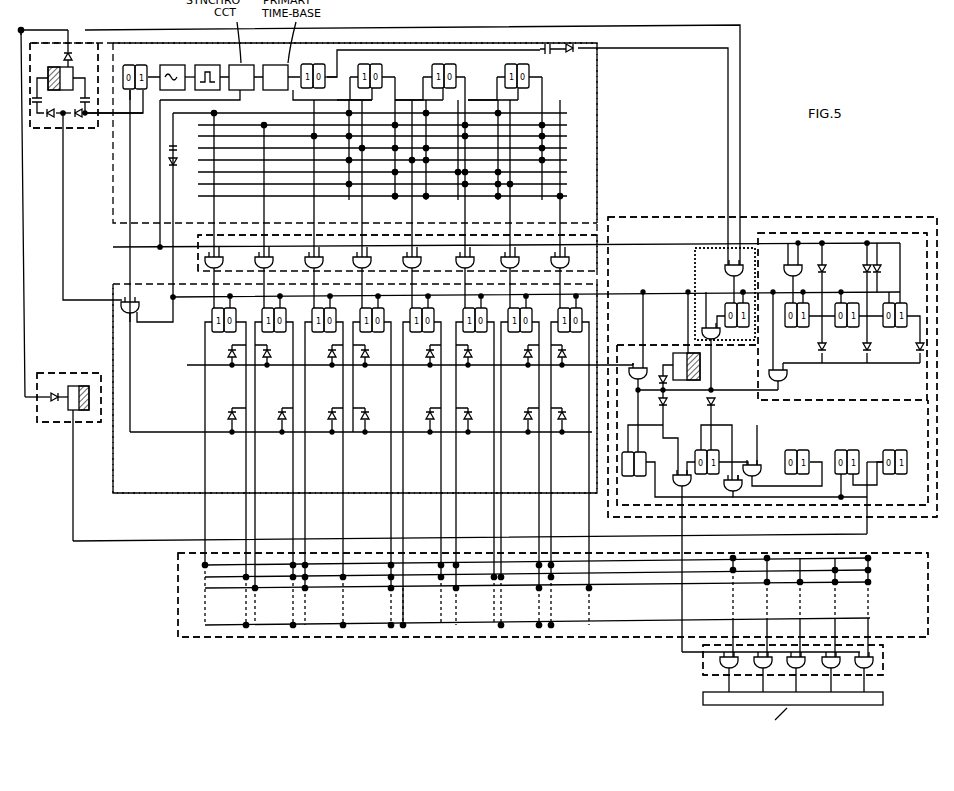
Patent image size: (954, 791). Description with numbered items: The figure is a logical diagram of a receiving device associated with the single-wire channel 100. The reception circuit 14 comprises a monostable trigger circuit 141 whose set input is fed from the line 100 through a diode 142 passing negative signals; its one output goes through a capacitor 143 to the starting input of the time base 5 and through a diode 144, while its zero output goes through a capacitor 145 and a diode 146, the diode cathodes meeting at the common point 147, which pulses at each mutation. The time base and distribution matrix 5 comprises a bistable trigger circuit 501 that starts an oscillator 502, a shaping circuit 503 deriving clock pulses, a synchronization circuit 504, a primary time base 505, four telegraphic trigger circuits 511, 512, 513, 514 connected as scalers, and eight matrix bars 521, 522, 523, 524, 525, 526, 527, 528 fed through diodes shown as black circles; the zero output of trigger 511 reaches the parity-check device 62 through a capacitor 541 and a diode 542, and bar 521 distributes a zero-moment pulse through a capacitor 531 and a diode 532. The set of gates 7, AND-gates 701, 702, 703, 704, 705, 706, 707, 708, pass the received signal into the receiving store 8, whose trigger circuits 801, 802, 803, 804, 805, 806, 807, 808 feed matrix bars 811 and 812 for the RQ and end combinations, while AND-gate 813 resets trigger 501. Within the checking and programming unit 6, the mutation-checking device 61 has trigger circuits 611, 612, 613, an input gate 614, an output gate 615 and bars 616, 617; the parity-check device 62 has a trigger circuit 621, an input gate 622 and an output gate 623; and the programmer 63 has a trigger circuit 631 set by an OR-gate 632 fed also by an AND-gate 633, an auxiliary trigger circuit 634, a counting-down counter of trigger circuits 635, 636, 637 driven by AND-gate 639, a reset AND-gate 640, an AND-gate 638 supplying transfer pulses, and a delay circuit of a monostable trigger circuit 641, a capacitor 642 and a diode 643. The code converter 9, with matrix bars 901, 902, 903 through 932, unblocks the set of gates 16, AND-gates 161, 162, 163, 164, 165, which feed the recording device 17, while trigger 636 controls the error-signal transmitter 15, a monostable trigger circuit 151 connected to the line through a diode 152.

The single-wire channel 100 is at (38, 21).
The reception circuit 14 is at (89, 127).
The monostable trigger circuit 141 is at (52, 72).
The diode 142 is at (66, 56).
The capacitor 143 is at (78, 95).
The diode 144 is at (78, 117).
The capacitor 145 is at (46, 95).
The diode 146 is at (52, 116).
The common point of diodes 147 is at (63, 117).
The error-signal transmitter 15 is at (68, 373).
The monostable trigger circuit 151 is at (64, 391).
The diode 152 is at (66, 463).
The time base and distribution matrix 5 is at (595, 97).
The bistable trigger circuit 501 is at (136, 65).
The oscillator 502 is at (177, 70).
The shaping circuit 503 is at (212, 70).
The synchronization circuit 504 is at (211, 75).
The primary time base 505 is at (286, 65).
The trigger circuit 511 is at (308, 65).
The trigger circuit 512 is at (373, 65).
The trigger circuit 513 is at (428, 65).
The trigger circuit 514 is at (505, 65).
The matrix bar 521 is at (381, 114).
The matrix bar 522 is at (393, 126).
The matrix bar 523 is at (393, 137).
The matrix bar 524 is at (393, 149).
The matrix bar 525 is at (393, 161).
The matrix bar 526 is at (393, 173).
The matrix bar 527 is at (393, 185).
The matrix bar 528 is at (393, 197).
The capacitor 531 is at (182, 148).
The diode 532 is at (182, 160).
The capacitor 541 is at (548, 54).
The diode 542 is at (576, 54).
The checking and programming unit 6 is at (680, 217).
The device for checking the number of mutations 61 is at (927, 233).
The trigger circuit 611 is at (810, 317).
The trigger circuit 612 is at (850, 334).
The trigger circuit 613 is at (898, 334).
The input gate 614 is at (792, 260).
The output gate 615 is at (786, 372).
The matrix bar 616 is at (868, 260).
The matrix bar 617 is at (856, 365).
The parity-check device 62 is at (699, 261).
The trigger circuit 621 is at (726, 304).
The input gate 622 is at (729, 277).
The output gate 623 is at (721, 334).
The programmer 63 is at (631, 346).
The trigger circuit 631 is at (714, 452).
The OR-gate 632 is at (717, 401).
The AND-gate 633 is at (698, 371).
The trigger circuit 634 is at (645, 452).
The trigger circuit 635 is at (797, 450).
The trigger circuit 636 is at (847, 450).
The trigger circuit 637 is at (897, 450).
The AND-gate 638 is at (687, 561).
The AND-gate 639 is at (779, 467).
The AND-gate 640 is at (793, 487).
The monostable trigger circuit 641 is at (690, 340).
The capacitor 642 is at (671, 381).
The diode 643 is at (664, 402).
The set of gates 7 is at (197, 256).
The AND-gate 701 is at (222, 277).
The AND-gate 702 is at (272, 277).
The AND-gate 703 is at (322, 277).
The AND-gate 704 is at (370, 277).
The AND-gate 705 is at (420, 277).
The AND-gate 706 is at (473, 277).
The AND-gate 707 is at (518, 277).
The AND-gate 708 is at (568, 277).
The receiving store 8 is at (110, 300).
The trigger circuit 801 is at (225, 435).
The trigger circuit 802 is at (274, 441).
The trigger circuit 803 is at (324, 441).
The trigger circuit 804 is at (372, 441).
The trigger circuit 805 is at (422, 459).
The trigger circuit 806 is at (475, 441).
The trigger circuit 807 is at (520, 441).
The trigger circuit 808 is at (570, 441).
The matrix bar 811 is at (193, 369).
The matrix bar 812 is at (193, 432).
The AND-gate 813 is at (135, 303).
The code converter 9 is at (176, 593).
The matrix bar 901 is at (548, 559).
The matrix bar 902 is at (548, 571).
The matrix bar 903 is at (548, 583).
The matrix bar 932 is at (548, 619).
The set of gates 16 is at (885, 651).
The AND-gate 161 is at (731, 672).
The AND-gate 162 is at (764, 672).
The AND-gate 163 is at (798, 672).
The AND-gate 164 is at (832, 672).
The AND-gate 165 is at (866, 672).
The recording device 17 is at (883, 694).